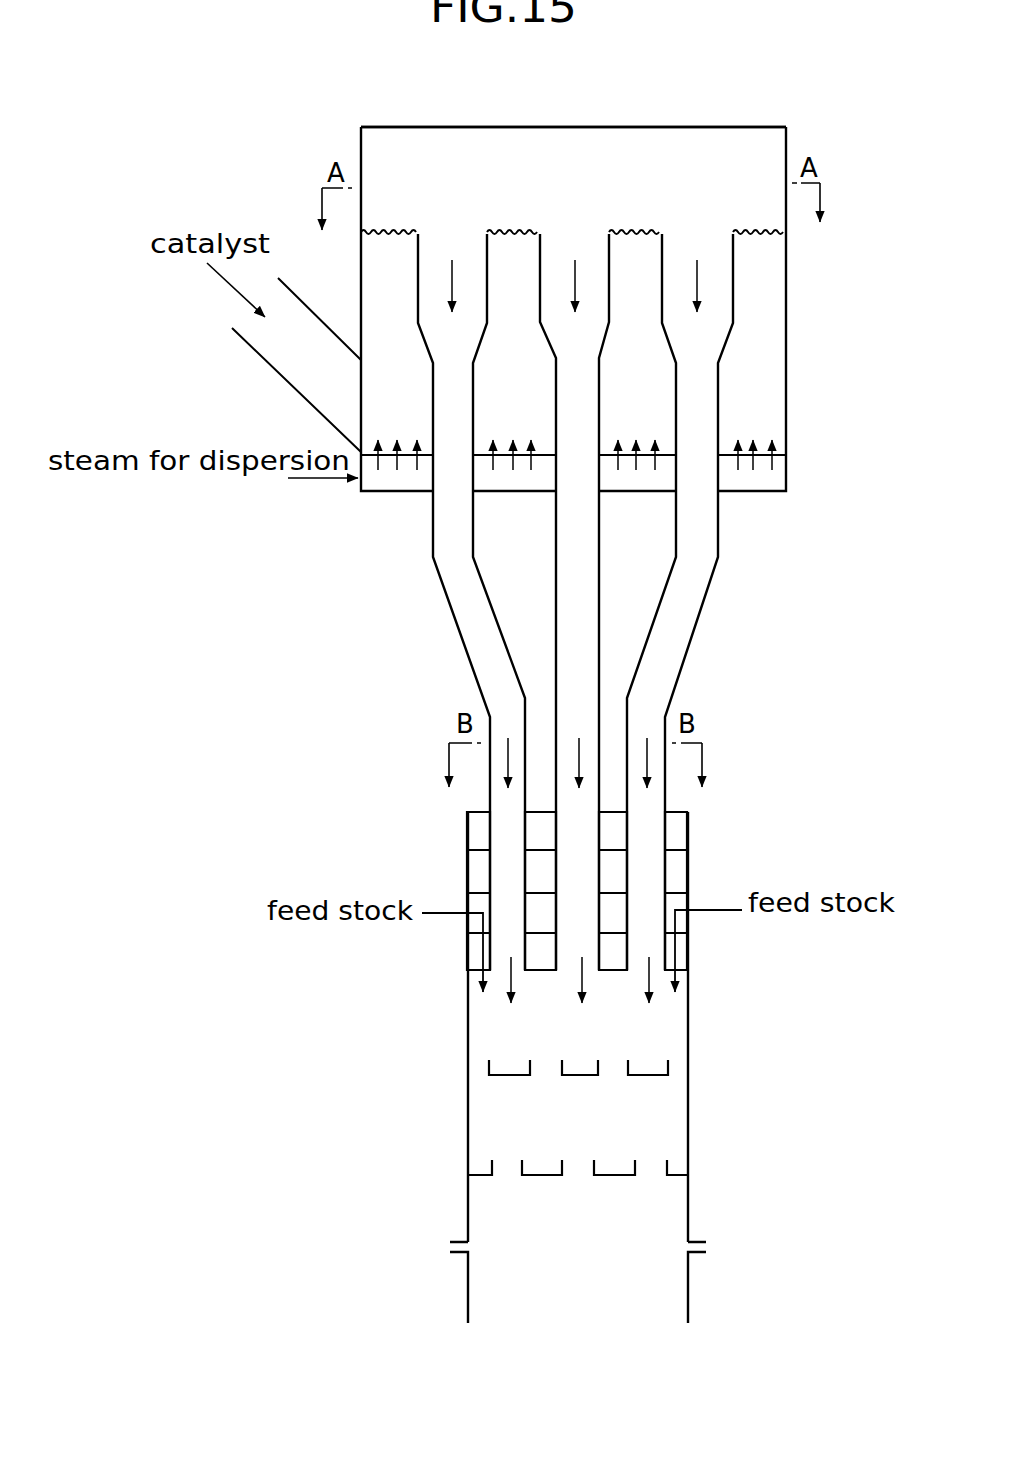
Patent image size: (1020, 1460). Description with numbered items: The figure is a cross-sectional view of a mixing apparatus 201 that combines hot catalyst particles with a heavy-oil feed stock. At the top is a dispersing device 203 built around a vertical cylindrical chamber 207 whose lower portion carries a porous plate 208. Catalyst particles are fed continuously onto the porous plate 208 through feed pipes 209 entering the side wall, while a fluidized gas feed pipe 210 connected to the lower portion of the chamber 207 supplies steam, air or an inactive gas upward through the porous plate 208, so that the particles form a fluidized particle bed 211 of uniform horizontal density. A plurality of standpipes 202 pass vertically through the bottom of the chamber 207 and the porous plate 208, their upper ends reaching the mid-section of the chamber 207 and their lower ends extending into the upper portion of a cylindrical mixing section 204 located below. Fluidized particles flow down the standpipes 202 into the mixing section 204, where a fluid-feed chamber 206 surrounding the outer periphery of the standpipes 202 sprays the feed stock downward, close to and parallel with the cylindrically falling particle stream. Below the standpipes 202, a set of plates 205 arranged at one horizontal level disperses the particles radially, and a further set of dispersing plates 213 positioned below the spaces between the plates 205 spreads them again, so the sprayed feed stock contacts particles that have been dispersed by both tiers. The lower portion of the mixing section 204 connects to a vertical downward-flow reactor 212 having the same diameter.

The mixing apparatus 201 is at (807, 112).
The standpipes 202 is at (450, 605).
The dispersing device 203 is at (789, 380).
The mixing section 204 is at (466, 1125).
The plates 205 is at (489, 1073).
The fluid-feed chamber 206 is at (465, 845).
The chamber 207 is at (570, 127).
The porous plate 208 is at (779, 452).
The feed pipes 209 is at (298, 391).
The fluidized gas feed pipe 210 is at (315, 487).
The fluidized particle bed 211 is at (532, 409).
The reactor 212 is at (690, 1285).
The dispersing plates 213 is at (548, 1177).